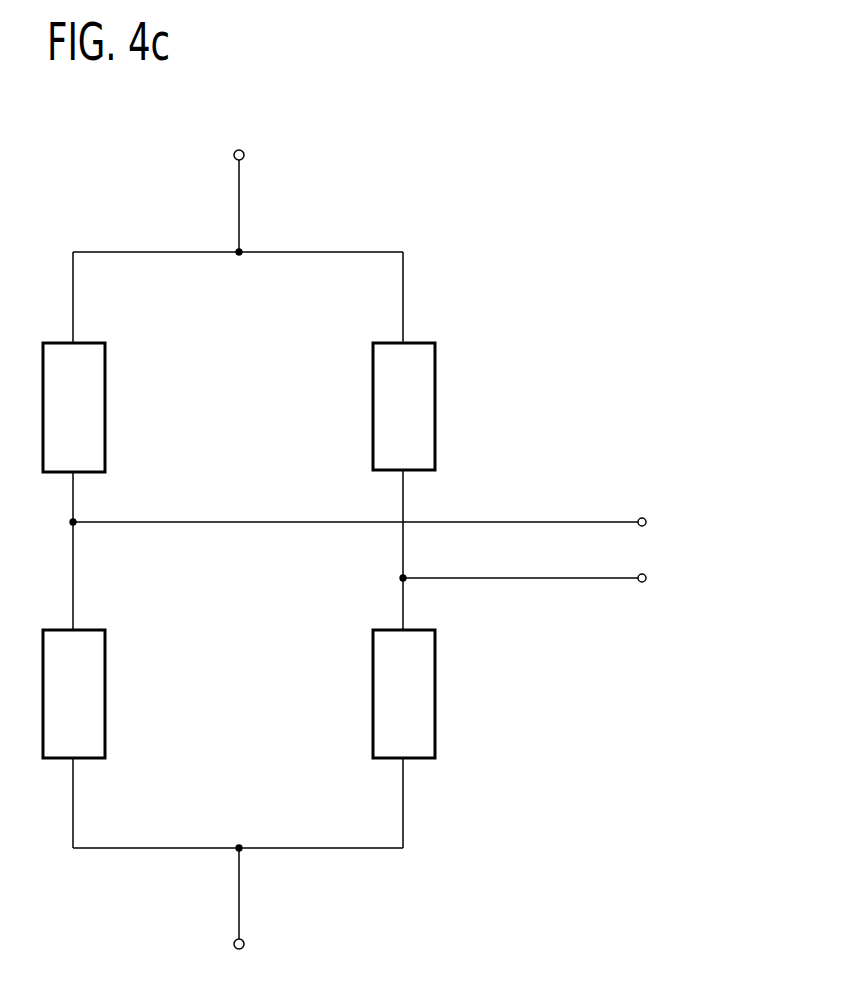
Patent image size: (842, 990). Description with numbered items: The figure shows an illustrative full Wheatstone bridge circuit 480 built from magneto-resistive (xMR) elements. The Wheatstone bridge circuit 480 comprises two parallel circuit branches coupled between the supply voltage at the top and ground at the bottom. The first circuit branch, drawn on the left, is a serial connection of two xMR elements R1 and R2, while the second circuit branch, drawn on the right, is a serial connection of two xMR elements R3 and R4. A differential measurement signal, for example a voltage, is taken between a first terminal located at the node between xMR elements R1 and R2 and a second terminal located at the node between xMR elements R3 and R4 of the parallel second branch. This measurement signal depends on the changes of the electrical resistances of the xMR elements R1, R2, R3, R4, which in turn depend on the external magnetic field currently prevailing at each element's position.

The full Wheatstone bridge circuit 480 is at (478, 124).
The xMR element R1 is at (74, 407).
The xMR element R2 is at (74, 694).
The xMR element R3 is at (404, 406).
The xMR element R4 is at (404, 694).